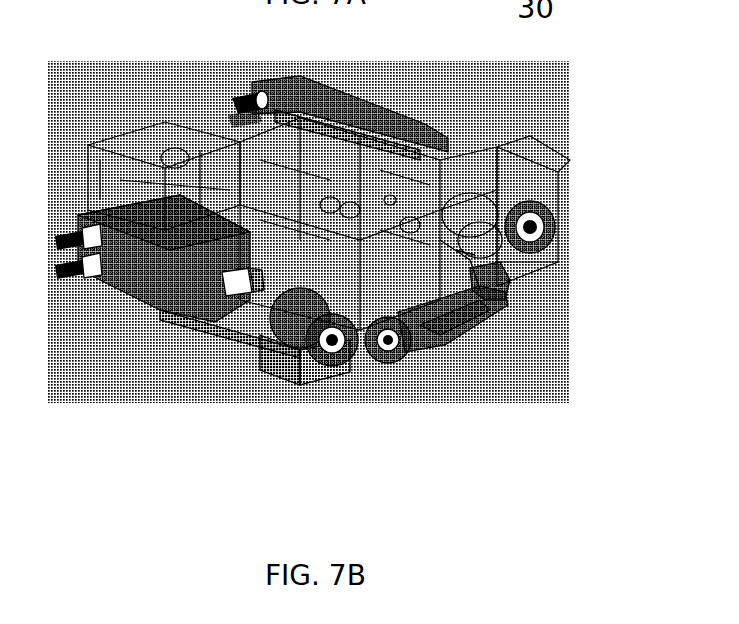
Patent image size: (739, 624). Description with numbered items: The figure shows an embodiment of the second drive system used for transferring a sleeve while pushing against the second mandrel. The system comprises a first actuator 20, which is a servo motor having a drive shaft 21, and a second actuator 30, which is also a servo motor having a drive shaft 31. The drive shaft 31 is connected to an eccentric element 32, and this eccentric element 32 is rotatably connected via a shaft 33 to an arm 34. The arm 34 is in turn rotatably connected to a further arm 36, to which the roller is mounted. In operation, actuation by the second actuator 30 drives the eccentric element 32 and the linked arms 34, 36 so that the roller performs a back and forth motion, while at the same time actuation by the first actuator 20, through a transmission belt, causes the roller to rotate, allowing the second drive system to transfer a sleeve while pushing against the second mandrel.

The first actuator 20 is at (253, 72).
The drive shaft 21 is at (535, 228).
The second actuator 30 is at (158, 323).
The drive shaft 31 is at (235, 283).
The eccentric element 32 is at (343, 347).
The shaft 33 is at (388, 342).
The arm 34 is at (442, 328).
The arm 36 is at (488, 282).